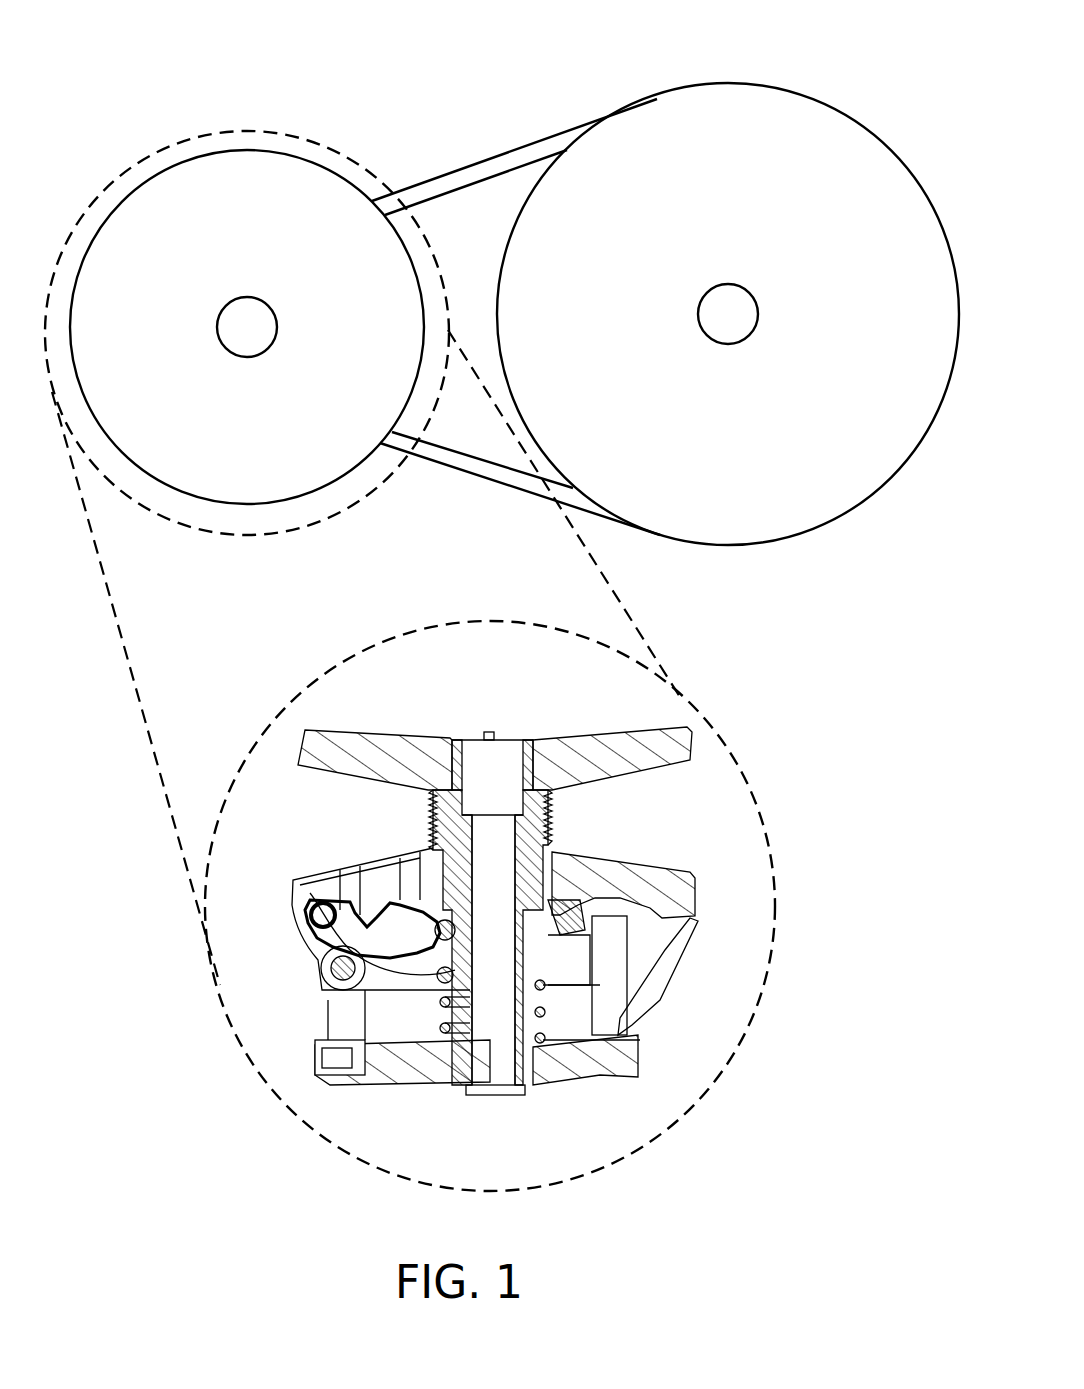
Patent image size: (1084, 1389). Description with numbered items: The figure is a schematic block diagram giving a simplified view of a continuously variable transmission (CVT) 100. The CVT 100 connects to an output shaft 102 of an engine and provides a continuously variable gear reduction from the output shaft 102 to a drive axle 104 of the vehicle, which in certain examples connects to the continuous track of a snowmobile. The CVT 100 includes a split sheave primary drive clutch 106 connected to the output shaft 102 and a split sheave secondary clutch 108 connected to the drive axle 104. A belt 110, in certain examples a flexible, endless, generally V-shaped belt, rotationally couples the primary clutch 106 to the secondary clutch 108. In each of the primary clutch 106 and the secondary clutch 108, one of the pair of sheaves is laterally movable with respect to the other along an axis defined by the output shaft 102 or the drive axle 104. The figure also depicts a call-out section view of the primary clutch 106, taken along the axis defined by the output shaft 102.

The continuously variable transmission (CVT) 100 is at (126, 68).
The output shaft 102 is at (247, 327).
The drive axle 104 is at (728, 314).
The split sheave primary drive clutch 106 is at (770, 875).
The split sheave secondary clutch 108 is at (728, 314).
The belt 110 is at (465, 165).